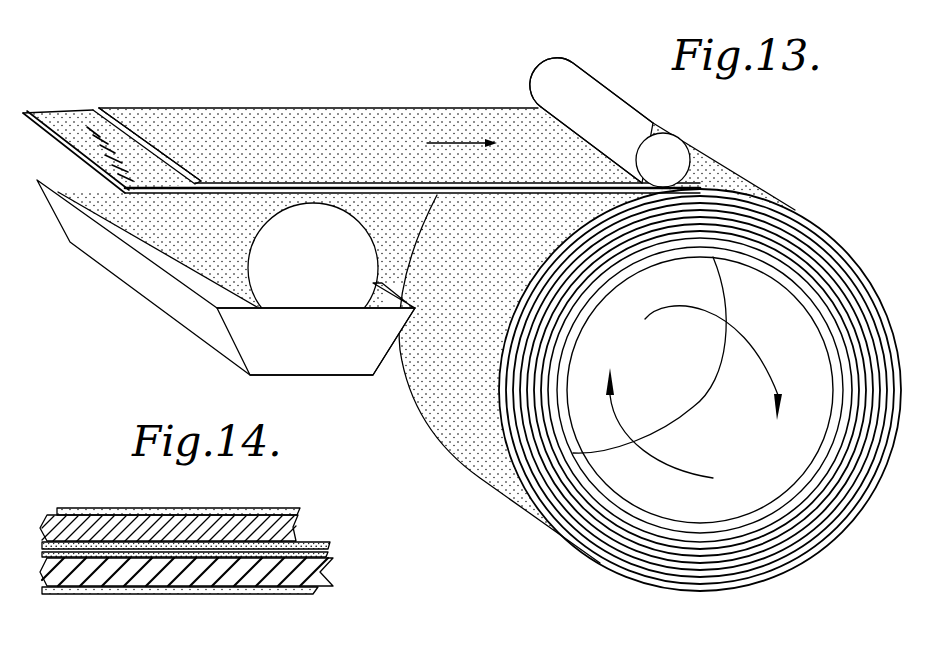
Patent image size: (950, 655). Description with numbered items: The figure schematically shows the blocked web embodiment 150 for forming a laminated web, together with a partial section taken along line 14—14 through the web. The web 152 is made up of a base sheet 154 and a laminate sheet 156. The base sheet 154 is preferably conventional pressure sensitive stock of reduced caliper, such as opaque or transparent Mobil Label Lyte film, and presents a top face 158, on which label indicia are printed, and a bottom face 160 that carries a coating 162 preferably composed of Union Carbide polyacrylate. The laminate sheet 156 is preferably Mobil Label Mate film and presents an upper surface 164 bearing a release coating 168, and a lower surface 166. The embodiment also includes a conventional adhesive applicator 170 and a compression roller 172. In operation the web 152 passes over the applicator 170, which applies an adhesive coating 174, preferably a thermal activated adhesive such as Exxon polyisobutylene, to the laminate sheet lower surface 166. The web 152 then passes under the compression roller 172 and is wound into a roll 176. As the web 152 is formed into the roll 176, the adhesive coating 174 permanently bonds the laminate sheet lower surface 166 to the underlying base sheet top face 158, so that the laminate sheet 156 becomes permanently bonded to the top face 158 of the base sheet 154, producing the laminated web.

In FIG. 13, the line 14— 14 is at (262, 90).
In FIG. 13, the blocked web embodiment 150 is at (420, 80).
In FIG. 13, the web 152 is at (363, 115).
In FIG. 14, the web 152 is at (103, 497).
In FIG. 13, the base sheet 154 is at (123, 113).
In FIG. 14, the base sheet 154 is at (277, 527).
In FIG. 13, the laminate sheet 156 is at (70, 123).
In FIG. 14, the laminate sheet 156 is at (330, 572).
In FIG. 14, the top face 158 is at (260, 508).
In FIG. 14, the bottom face 160 is at (200, 557).
In FIG. 14, the coating 162 is at (323, 547).
In FIG. 14, the upper surface 164 is at (147, 547).
In FIG. 14, the lower surface 166 is at (160, 593).
In FIG. 14, the release coating 168 is at (120, 512).
In FIG. 13, the adhesive applicator 170 is at (153, 283).
In FIG. 13, the compression roller 172 is at (577, 82).
In FIG. 13, the adhesive coating 174 is at (663, 160).
In FIG. 14, the adhesive coating 174 is at (335, 622).
In FIG. 13, the roll 176 is at (597, 562).